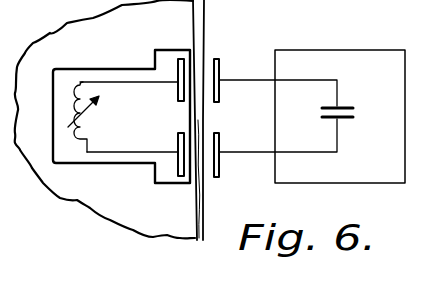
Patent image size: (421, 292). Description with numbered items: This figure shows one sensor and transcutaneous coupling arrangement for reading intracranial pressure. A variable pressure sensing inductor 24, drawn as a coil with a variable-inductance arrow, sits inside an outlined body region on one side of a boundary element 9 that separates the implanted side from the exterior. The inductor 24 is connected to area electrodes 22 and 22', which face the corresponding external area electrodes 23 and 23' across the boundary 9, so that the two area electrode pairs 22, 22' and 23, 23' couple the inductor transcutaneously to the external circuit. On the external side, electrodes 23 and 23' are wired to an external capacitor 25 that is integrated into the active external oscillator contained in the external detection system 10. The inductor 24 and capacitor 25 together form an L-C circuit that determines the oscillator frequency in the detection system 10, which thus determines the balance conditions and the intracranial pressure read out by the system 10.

The rod 9 is at (203, 218).
The external detection system 10 is at (338, 67).
The area electrode 22 is at (172, 61).
The area electrode 22' is at (172, 173).
The area electrode 23 is at (230, 63).
The area electrode 23' is at (236, 173).
The variable pressure sensing inductor 24 is at (82, 138).
The external capacitor 25 is at (347, 107).